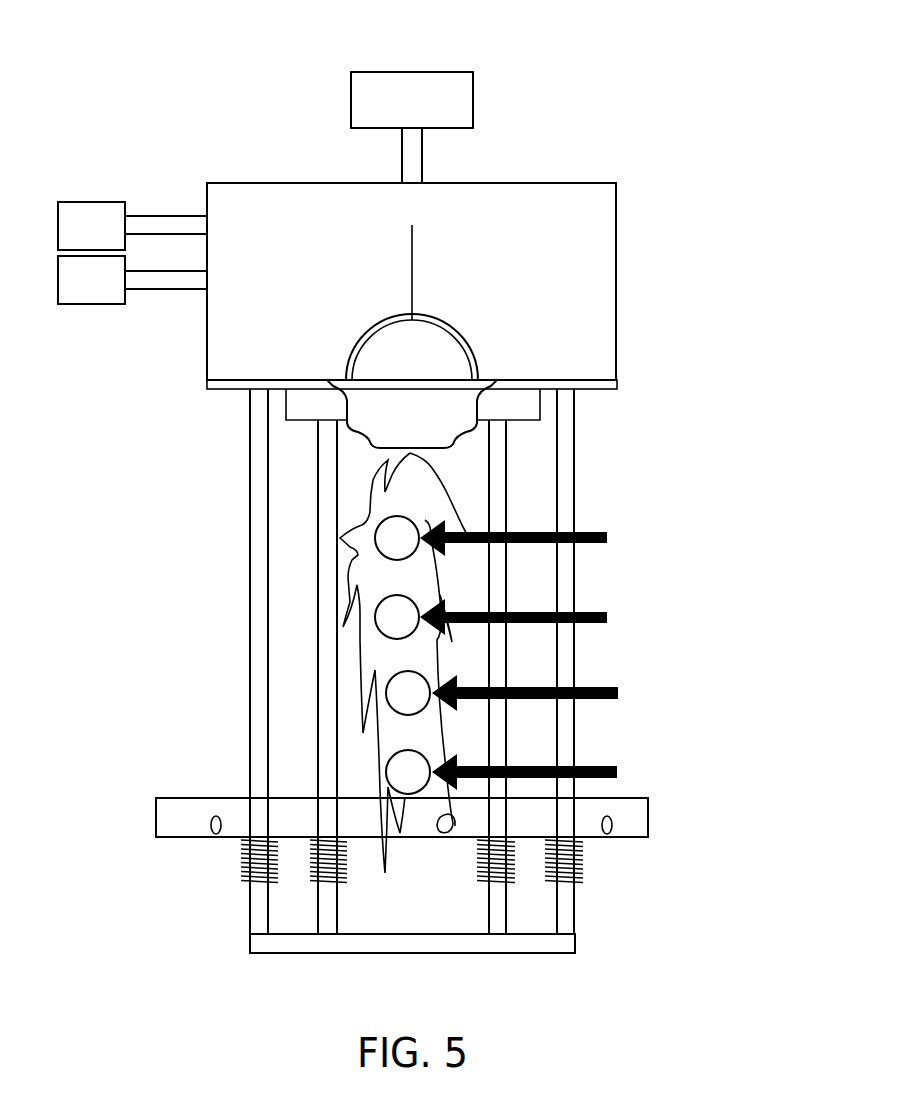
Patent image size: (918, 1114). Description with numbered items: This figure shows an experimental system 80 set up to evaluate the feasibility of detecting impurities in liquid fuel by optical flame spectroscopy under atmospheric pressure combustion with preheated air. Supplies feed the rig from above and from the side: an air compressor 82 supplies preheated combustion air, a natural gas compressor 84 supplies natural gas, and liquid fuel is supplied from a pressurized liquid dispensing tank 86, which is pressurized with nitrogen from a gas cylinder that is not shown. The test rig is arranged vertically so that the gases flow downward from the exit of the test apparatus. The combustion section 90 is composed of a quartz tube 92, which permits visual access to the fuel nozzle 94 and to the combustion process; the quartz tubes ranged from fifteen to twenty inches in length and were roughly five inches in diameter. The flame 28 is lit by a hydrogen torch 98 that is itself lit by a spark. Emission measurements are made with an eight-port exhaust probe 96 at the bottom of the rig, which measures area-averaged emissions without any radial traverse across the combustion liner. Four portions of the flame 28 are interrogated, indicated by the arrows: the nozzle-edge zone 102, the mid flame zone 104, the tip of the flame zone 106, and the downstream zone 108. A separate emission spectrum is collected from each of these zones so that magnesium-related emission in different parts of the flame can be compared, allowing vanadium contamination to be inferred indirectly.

The experimental system 80 is at (688, 63).
The air compressor 82 is at (426, 106).
The natural gas compressor 84 is at (106, 238).
The pressurized liquid dispensing tank 86 is at (106, 292).
The hydrogen torch 98 is at (360, 340).
The fuel nozzle 94 is at (363, 442).
The flame 28 is at (347, 597).
The quartz tube 92 is at (318, 697).
The combustion section 90 is at (355, 762).
The 8-port exhaust probe 96 is at (575, 943).
The nozzle-edge zone 102 is at (592, 530).
The mid flame zone 104 is at (590, 610).
The tip of the flame zone 106 is at (602, 685).
The downstream zone 108 is at (600, 763).